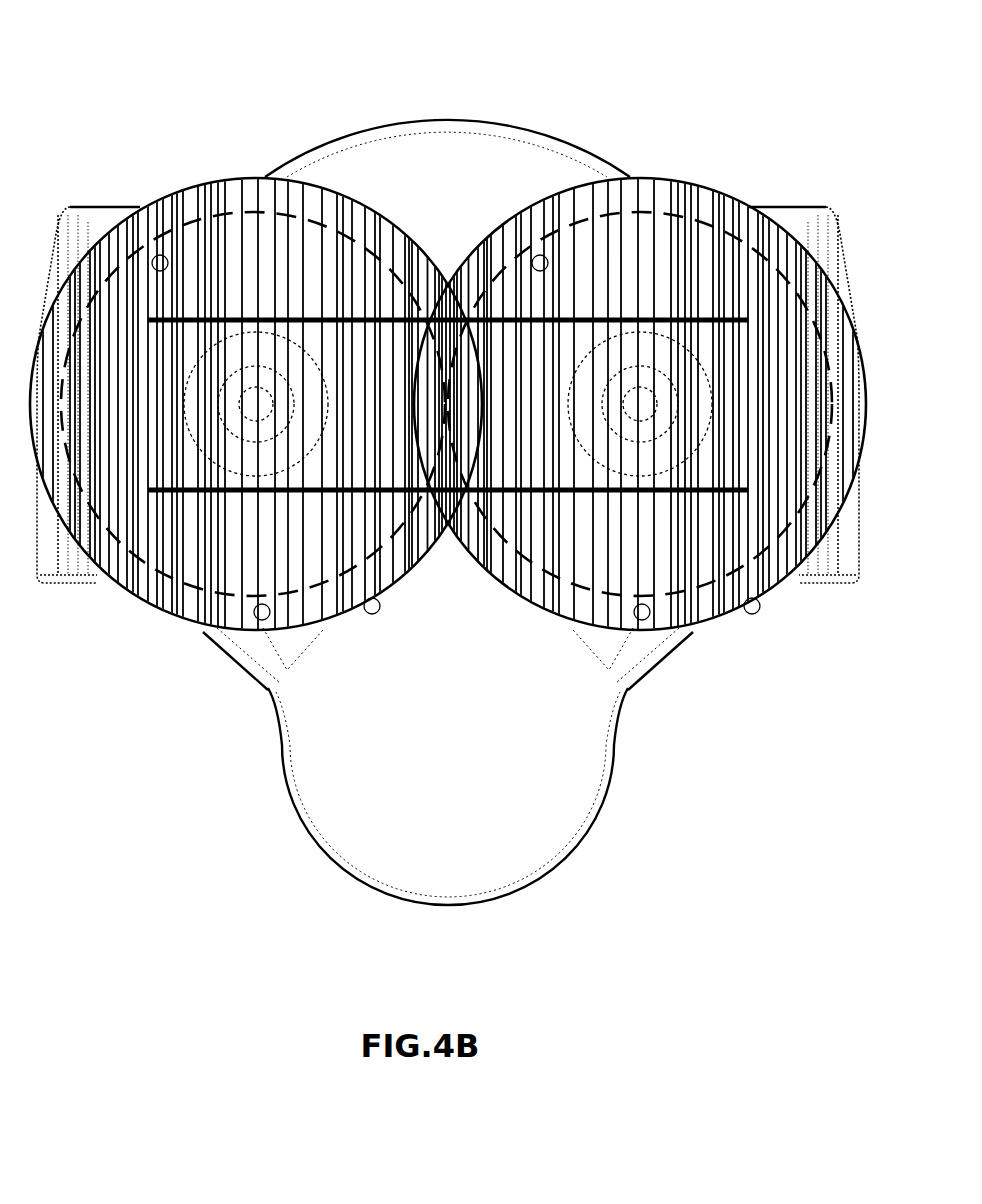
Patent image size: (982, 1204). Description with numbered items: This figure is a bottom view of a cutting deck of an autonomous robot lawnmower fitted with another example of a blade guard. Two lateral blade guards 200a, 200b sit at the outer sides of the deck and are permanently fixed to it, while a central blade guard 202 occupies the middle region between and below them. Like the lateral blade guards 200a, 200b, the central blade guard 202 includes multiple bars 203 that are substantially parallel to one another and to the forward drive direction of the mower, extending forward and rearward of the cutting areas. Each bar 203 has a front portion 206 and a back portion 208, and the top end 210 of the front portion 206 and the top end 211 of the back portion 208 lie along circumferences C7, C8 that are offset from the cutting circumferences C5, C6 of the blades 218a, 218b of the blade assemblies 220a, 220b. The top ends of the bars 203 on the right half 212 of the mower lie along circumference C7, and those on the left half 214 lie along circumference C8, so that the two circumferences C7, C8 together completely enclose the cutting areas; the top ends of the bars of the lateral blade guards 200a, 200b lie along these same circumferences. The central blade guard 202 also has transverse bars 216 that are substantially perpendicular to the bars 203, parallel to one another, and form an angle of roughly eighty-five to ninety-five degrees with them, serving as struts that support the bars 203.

The central blade guard 202 is at (454, 734).
The bars 203 is at (547, 567).
The front portion 206 is at (263, 372).
The back portion 208 is at (607, 377).
The top end of the front portion 210 is at (370, 600).
The top end of the back portion 211 is at (445, 280).
The right half 212 is at (448, 73).
The left half 214 is at (52, 74).
The transverse bars 216 is at (422, 490).
The blade 218a is at (712, 563).
The blade 218b is at (310, 568).
The blade assembly 220a is at (652, 333).
The blade assembly 220b is at (243, 330).
The lateral blade guard 200a is at (805, 432).
The lateral blade guard 200b is at (88, 425).
The cutting circumference C5 is at (737, 238).
The cutting circumference C6 is at (175, 226).
The circumference C7 is at (792, 237).
The circumference C8 is at (127, 220).